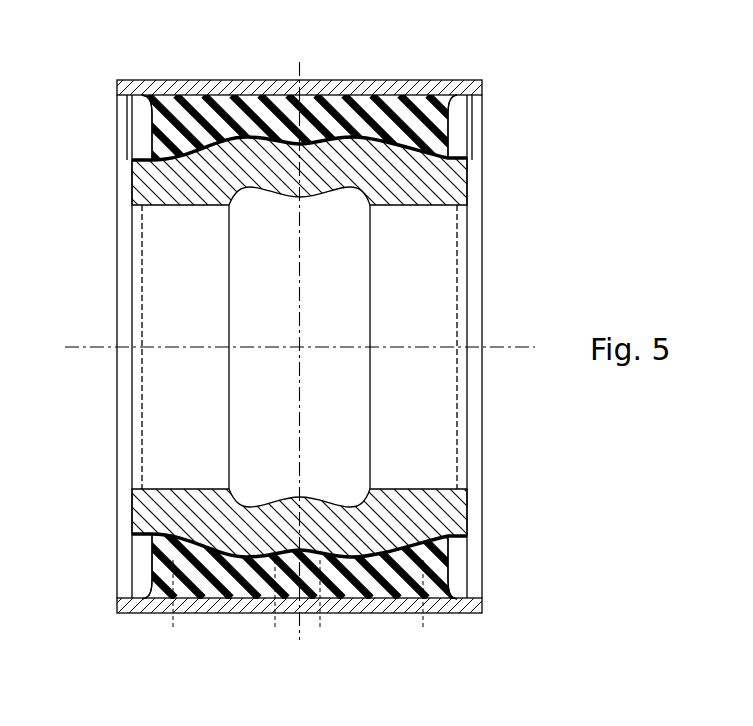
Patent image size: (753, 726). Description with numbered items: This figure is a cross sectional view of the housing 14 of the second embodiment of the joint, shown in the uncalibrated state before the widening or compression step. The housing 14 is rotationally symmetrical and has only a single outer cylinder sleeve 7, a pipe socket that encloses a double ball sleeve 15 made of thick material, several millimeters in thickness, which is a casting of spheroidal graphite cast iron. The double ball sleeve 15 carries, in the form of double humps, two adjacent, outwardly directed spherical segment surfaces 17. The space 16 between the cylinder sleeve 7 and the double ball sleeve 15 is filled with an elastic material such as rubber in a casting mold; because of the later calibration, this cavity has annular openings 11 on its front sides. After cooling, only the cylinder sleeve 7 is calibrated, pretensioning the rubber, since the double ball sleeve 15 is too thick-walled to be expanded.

The outer cylinder sleeve 7 is at (426, 92).
The annular openings 11 is at (458, 128).
The housing 14 is at (483, 514).
The double ball sleeve 15 is at (452, 182).
The space 16 is at (192, 92).
The spherical segment surfaces 17 is at (173, 630).